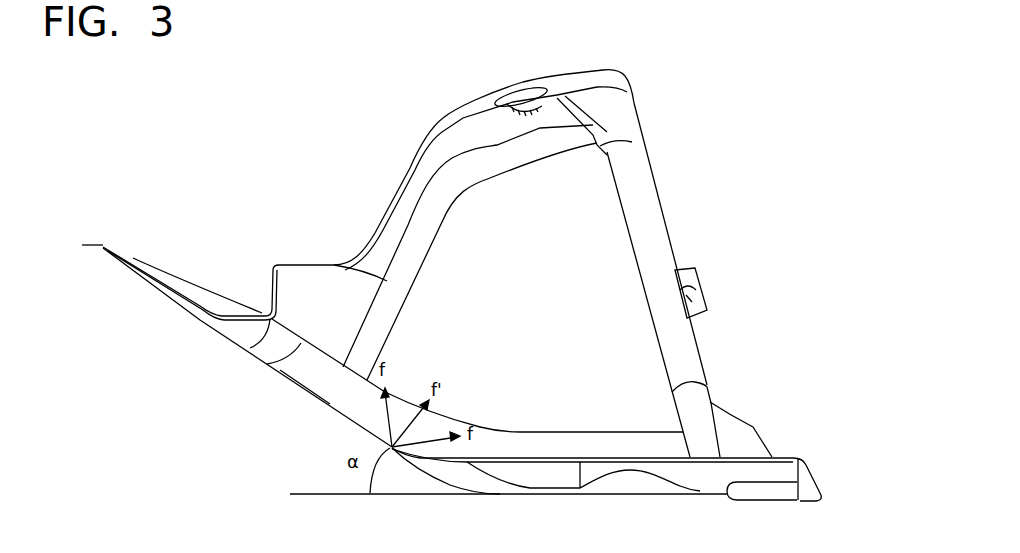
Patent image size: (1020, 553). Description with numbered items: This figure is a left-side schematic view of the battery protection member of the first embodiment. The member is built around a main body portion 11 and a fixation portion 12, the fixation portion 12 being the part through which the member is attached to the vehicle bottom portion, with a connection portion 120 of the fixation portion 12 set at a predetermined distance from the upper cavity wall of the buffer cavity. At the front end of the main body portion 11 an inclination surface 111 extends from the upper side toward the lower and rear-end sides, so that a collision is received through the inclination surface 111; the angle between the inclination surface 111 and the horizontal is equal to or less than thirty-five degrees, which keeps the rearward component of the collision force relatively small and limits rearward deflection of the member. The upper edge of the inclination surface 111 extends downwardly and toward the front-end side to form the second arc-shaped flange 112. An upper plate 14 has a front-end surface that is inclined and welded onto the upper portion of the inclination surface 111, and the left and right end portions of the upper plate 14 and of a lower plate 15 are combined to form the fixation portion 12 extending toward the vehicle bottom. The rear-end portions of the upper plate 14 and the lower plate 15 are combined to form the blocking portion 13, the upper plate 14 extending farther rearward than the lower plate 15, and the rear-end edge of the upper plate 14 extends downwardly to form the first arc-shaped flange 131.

The main body portion 11 is at (342, 407).
The inclination surface 111 is at (307, 393).
The second arc-shaped flange 112 is at (88, 244).
The fixation portion 12 is at (447, 147).
The connection portion 120 is at (511, 92).
The blocking portion 13 is at (772, 458).
The first arc-shaped flange 131 is at (807, 473).
The upper plate 14 is at (197, 300).
The lower plate 15 is at (238, 328).